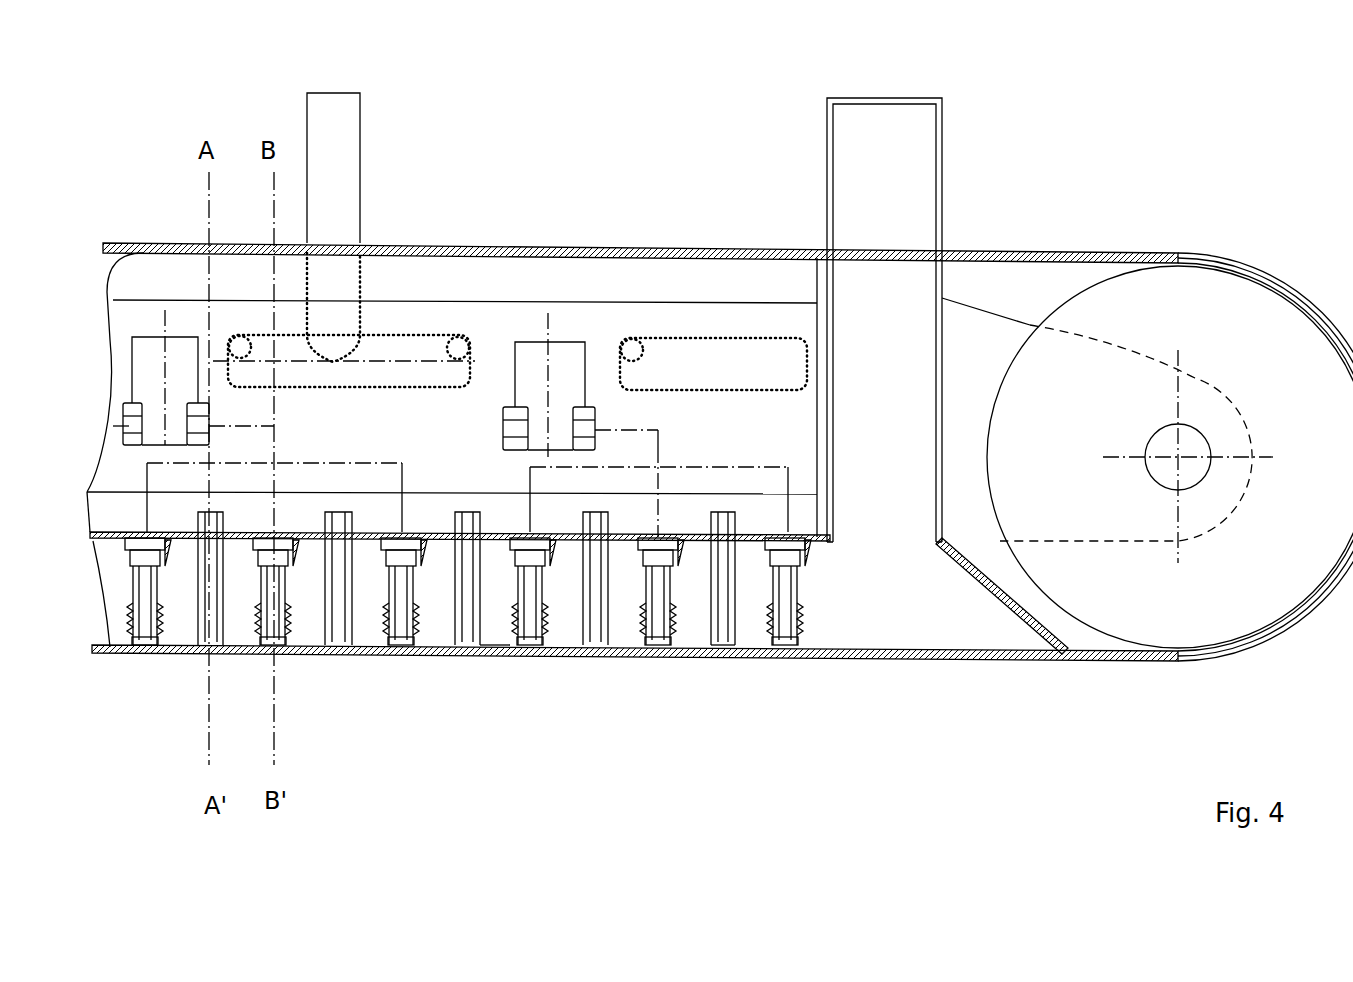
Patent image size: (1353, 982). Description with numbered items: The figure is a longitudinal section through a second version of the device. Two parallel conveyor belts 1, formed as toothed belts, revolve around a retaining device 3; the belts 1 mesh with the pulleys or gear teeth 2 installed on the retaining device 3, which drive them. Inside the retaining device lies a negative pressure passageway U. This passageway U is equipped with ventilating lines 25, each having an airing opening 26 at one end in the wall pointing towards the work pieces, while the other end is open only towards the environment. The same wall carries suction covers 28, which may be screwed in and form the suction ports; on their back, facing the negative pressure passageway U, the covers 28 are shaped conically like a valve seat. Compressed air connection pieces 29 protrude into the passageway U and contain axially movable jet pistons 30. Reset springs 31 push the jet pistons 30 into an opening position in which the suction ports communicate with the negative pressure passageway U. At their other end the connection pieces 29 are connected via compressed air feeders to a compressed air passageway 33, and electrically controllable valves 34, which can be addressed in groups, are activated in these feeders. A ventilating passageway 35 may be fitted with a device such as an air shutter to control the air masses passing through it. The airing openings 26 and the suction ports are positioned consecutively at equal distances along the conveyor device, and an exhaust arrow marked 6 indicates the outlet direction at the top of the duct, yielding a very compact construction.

The conveyor belt 1 is at (1027, 252).
The pulley 2 is at (1243, 303).
The retaining device 3 is at (661, 218).
The exhaust duct 6 is at (884, 83).
The ventilating line 25 is at (705, 597).
The airing opening 26 is at (735, 655).
The suction cover 28 is at (542, 657).
The compressed air connection piece 29 is at (530, 590).
The jet piston 30 is at (498, 657).
The reset spring 31 is at (805, 627).
The compressed air passageway 33 is at (343, 163).
The valve 34 is at (503, 428).
The ventilating passageway 35 is at (425, 520).
The negative pressure passageway U is at (912, 607).